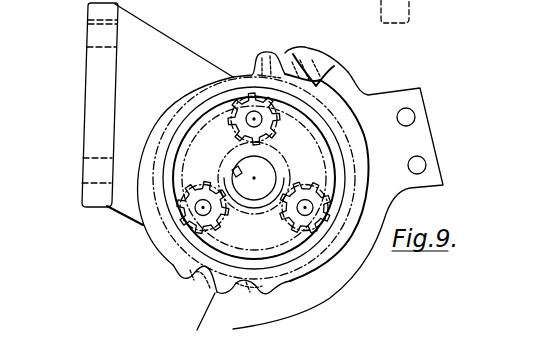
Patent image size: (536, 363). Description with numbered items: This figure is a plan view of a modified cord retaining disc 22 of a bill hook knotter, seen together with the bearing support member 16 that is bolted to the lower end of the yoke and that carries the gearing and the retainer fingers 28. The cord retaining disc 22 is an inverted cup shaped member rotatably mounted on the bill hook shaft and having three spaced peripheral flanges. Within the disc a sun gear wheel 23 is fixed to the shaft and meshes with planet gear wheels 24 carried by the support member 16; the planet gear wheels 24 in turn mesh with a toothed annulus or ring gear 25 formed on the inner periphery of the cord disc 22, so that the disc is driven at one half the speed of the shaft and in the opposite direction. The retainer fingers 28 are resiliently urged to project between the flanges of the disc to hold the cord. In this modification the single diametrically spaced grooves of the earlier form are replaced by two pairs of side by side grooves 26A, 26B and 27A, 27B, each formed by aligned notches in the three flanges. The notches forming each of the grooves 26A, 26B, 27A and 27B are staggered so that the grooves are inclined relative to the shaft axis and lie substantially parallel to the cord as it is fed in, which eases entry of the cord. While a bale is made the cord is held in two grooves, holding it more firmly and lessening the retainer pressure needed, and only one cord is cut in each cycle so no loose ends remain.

The bearing support member 16 is at (129, 204).
The cord retaining disc 22 is at (160, 116).
The sun gear wheel 23 is at (226, 184).
The planet gear wheels 24 is at (303, 182).
The ring gear 25 is at (203, 233).
The groove 26A is at (255, 287).
The groove 26B is at (194, 283).
The groove 27A is at (252, 66).
The groove 27B is at (317, 77).
The retainer fingers 28 is at (328, 283).